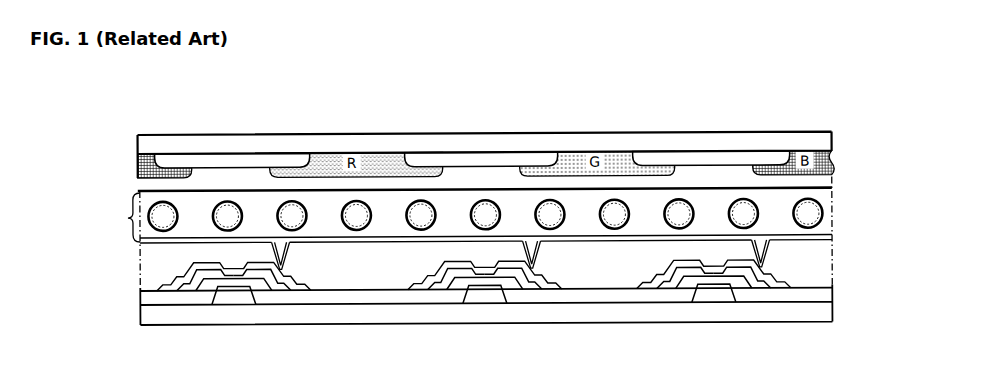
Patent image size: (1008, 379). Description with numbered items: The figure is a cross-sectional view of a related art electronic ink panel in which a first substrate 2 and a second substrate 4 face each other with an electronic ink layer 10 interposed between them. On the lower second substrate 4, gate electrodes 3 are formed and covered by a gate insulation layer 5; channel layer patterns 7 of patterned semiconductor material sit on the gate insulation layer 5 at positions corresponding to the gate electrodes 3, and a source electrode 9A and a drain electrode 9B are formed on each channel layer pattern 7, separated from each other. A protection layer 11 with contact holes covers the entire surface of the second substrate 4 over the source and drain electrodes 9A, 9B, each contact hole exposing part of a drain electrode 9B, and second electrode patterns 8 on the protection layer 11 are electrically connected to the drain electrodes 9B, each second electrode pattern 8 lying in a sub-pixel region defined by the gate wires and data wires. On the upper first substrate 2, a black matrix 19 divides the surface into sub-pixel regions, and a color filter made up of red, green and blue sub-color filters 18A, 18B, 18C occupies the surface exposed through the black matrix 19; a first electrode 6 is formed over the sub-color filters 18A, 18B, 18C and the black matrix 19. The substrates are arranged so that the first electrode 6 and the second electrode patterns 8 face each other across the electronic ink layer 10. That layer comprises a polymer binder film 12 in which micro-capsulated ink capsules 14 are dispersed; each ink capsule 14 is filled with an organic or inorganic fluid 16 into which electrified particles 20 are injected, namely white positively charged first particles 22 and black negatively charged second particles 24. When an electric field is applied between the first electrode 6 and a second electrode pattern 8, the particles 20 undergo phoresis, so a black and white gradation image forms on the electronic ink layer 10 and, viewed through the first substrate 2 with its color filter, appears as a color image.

The first substrate 2 is at (485, 154).
The gate electrode 3 is at (232, 300).
The second substrate 4 is at (481, 323).
The gate insulation layer 5 is at (140, 297).
The first electrode 6 is at (477, 172).
The channel layer pattern 7 is at (190, 289).
The second electrode pattern 8 is at (832, 240).
The source electrode 9A is at (423, 291).
The drain electrode 9B is at (553, 291).
The electronic ink layer 10 is at (123, 217).
The protection layer 11 is at (140, 268).
The binder film 12 is at (439, 212).
The ink capsule 14 is at (733, 197).
The fluid 16 is at (746, 200).
The red sub-color filter 18A is at (377, 157).
The green sub-color filter 18B is at (612, 157).
The blue sub-color filter 18C is at (790, 152).
The black matrix 19 is at (236, 158).
The electrified particles 20 is at (848, 210).
The first particles 22 is at (812, 207).
The second particles 24 is at (826, 226).